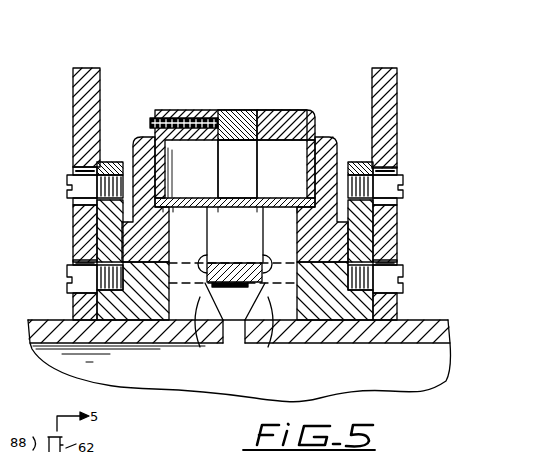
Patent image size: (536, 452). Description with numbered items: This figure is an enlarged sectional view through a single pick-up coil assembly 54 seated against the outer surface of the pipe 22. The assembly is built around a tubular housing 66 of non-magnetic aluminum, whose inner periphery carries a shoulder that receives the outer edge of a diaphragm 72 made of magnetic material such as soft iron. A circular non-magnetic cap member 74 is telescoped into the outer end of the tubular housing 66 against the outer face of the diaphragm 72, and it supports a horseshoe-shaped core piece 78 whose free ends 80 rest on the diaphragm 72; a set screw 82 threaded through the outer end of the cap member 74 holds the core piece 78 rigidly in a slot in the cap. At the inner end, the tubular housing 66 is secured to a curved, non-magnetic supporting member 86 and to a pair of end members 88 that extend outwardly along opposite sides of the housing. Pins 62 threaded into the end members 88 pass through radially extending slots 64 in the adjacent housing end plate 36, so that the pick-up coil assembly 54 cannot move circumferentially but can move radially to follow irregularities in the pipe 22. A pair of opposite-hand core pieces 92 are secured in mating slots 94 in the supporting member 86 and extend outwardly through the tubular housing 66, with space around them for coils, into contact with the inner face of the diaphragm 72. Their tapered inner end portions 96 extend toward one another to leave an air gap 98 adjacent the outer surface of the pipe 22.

The pipe 22 is at (332, 331).
The housing end plate 36 is at (88, 119).
The pick-up coil assembly 54 is at (212, 110).
The pins 62 is at (82, 193).
The slots 64 is at (73, 172).
The tubular housing 66 is at (333, 150).
The diaphragm 72 is at (204, 178).
The cap member 74 is at (277, 116).
The horseshoe-shaped core piece 78 is at (239, 118).
The free ends 80 is at (250, 178).
The set screw 82 is at (148, 121).
The supporting member 86 is at (225, 289).
The end members 88 is at (98, 238).
The core pieces 92 is at (272, 238).
The slots 94 is at (268, 262).
The inner end portions 96 is at (200, 347).
The air gap 98 is at (230, 325).